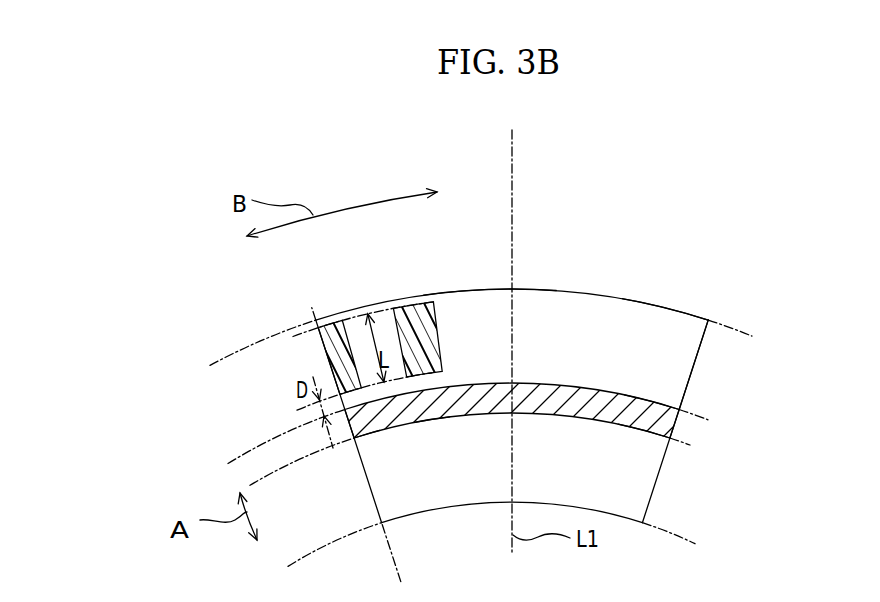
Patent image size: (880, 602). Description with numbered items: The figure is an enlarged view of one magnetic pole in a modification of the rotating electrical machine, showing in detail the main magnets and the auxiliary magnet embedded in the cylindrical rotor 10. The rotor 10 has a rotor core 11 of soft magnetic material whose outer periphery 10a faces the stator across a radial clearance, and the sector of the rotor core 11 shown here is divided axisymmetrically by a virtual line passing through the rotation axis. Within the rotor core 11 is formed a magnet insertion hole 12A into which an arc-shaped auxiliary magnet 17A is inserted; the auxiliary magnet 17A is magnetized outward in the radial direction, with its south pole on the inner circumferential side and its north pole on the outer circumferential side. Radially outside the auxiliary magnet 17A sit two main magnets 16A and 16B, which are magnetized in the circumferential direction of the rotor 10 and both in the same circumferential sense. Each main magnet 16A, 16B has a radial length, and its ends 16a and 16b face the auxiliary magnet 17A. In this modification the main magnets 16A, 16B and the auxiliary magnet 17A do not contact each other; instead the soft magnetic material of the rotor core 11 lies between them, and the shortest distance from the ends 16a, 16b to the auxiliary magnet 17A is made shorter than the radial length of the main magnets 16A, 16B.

The rotor 10 is at (642, 290).
The outer peripheral surface of rotor core 10a is at (533, 288).
The rotor core 11 is at (668, 382).
The magnet insertion hole 12A is at (523, 411).
The main magnet 16A is at (413, 350).
The main magnet 16B is at (333, 362).
The end of main magnet 16a is at (428, 421).
The end of main magnet 16b is at (361, 436).
The auxiliary magnet 17A is at (663, 425).